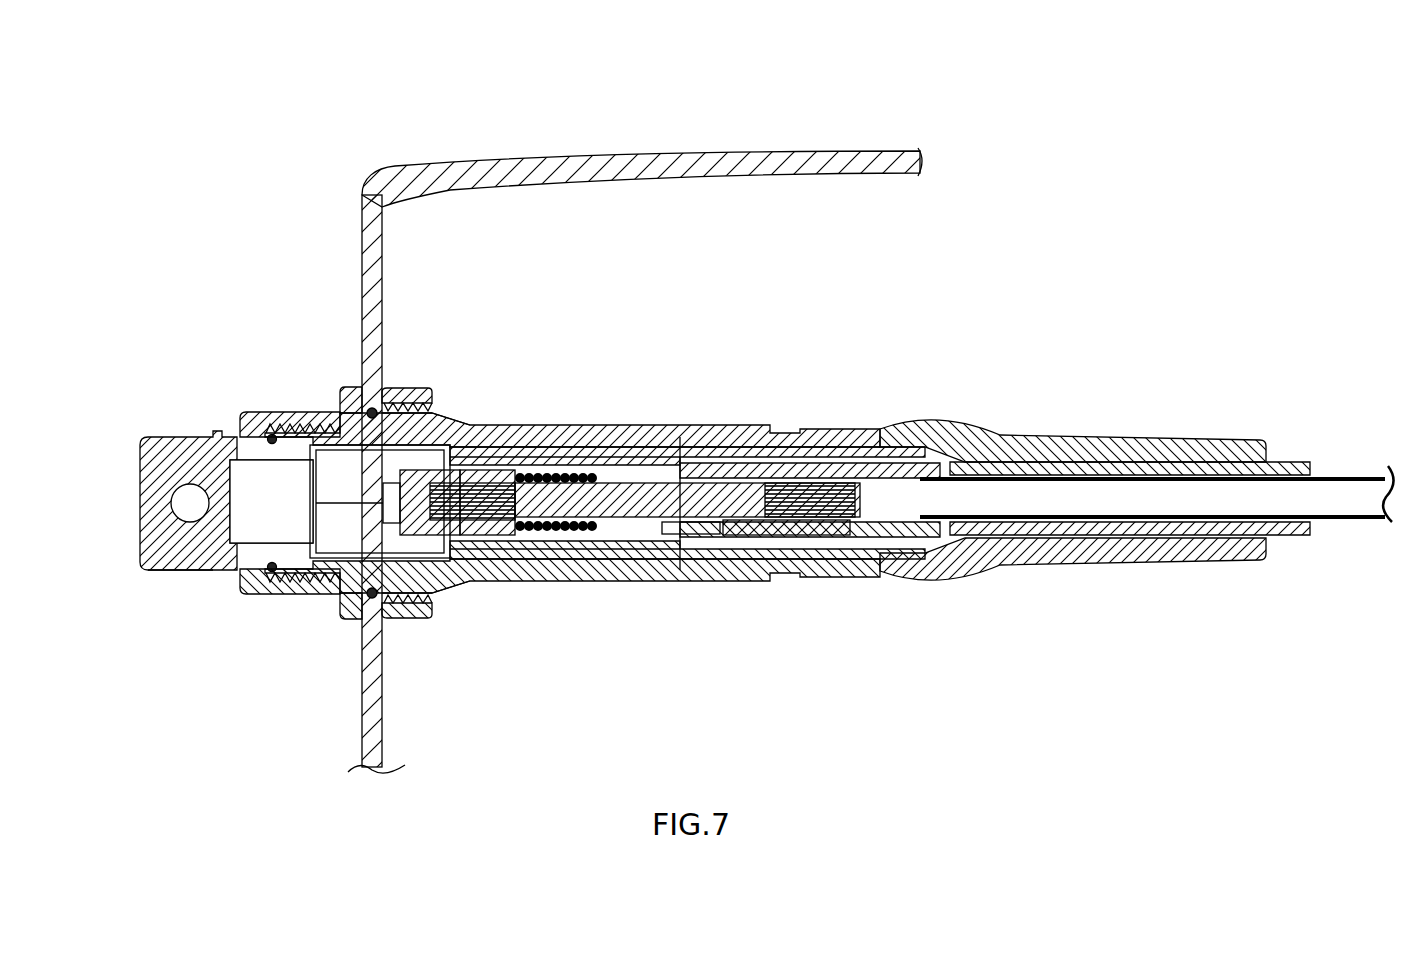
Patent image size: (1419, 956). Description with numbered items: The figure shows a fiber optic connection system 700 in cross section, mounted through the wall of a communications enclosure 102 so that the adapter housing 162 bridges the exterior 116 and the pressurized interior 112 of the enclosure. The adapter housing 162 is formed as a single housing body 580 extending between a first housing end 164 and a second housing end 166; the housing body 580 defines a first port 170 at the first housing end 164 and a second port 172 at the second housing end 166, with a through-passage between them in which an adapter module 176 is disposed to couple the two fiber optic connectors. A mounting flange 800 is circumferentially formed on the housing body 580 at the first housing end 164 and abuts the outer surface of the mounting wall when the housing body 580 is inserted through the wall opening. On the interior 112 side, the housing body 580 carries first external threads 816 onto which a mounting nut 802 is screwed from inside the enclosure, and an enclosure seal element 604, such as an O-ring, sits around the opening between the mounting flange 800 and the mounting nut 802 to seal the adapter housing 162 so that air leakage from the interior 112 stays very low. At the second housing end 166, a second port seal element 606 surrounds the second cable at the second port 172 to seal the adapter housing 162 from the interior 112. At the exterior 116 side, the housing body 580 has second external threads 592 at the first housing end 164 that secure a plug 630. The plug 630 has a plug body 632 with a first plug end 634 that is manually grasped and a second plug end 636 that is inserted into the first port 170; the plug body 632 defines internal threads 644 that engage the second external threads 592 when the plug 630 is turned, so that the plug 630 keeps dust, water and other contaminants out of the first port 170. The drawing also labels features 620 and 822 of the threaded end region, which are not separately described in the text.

The fiber optic connection system 700 is at (240, 106).
The communications enclosure 102 is at (852, 142).
The exterior 116 is at (262, 259).
The interior 112 is at (734, 266).
The mounting flange 800 is at (345, 388).
The enclosure seal element 604 is at (385, 392).
The mounting nut 802 is at (420, 390).
The first external threads 816 is at (433, 412).
The inner sleeve 822 is at (436, 442).
The second external threads 592 is at (300, 418).
The internal threads 644 is at (266, 433).
The plug 630 is at (126, 476).
The plug body 632 is at (150, 512).
The first plug end 634 is at (141, 582).
The coupling nut 620 is at (268, 562).
The first housing end 164 is at (267, 596).
The second plug end 636 is at (338, 602).
The first port 170 is at (358, 480).
The adapter module 176 is at (541, 540).
The adapter housing 162 is at (692, 392).
The housing body 580 is at (722, 432).
The second port 172 is at (928, 483).
The second port seal element 606 is at (1026, 465).
The second housing end 166 is at (922, 592).